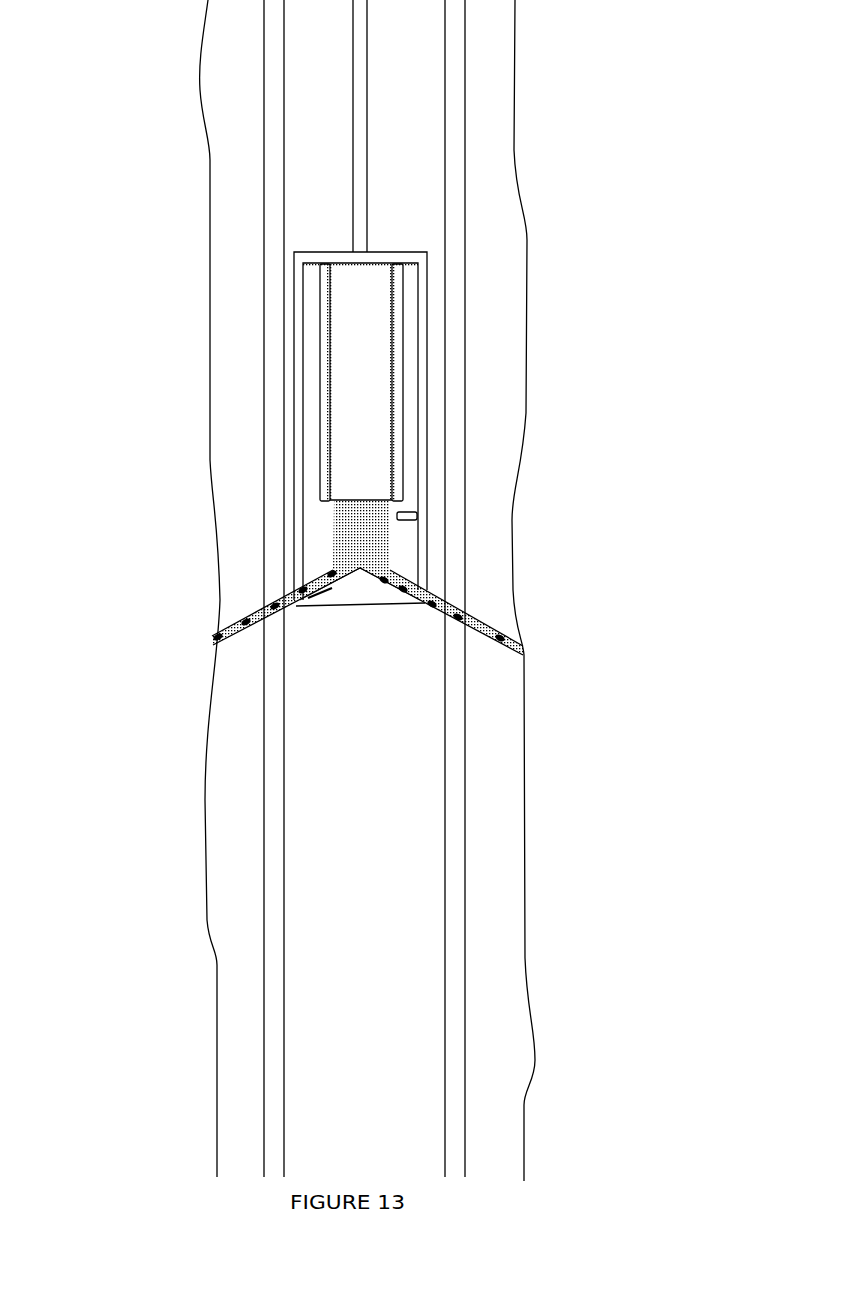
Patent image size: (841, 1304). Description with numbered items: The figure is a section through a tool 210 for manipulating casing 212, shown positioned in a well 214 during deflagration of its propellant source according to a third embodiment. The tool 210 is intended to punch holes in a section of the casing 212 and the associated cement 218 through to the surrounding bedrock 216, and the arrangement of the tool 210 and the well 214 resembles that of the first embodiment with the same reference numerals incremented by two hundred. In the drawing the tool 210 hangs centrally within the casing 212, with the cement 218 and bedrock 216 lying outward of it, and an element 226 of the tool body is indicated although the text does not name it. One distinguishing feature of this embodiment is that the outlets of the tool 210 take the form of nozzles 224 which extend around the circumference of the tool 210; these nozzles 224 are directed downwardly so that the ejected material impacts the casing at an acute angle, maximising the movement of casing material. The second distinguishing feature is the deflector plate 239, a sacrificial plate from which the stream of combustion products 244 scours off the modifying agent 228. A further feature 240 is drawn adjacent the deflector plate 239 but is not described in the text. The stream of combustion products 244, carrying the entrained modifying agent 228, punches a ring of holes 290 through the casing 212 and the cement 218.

The tool 210 is at (303, 225).
The casing 212 is at (268, 853).
The well 214 is at (325, 953).
The bedrock 216 is at (185, 982).
The cement 218 is at (227, 1042).
The nozzles 224 is at (300, 606).
The downhole tool body 226 is at (345, 407).
The modifying agent 228 is at (328, 585).
The deflector plate 239 is at (352, 591).
The cone surface 240 is at (390, 595).
The stream of combustion products 244 is at (383, 545).
The ring of holes 290 is at (325, 600).